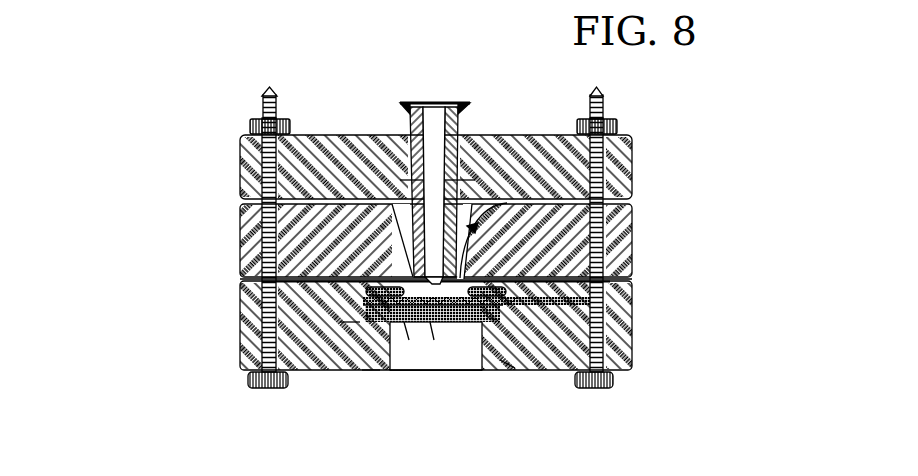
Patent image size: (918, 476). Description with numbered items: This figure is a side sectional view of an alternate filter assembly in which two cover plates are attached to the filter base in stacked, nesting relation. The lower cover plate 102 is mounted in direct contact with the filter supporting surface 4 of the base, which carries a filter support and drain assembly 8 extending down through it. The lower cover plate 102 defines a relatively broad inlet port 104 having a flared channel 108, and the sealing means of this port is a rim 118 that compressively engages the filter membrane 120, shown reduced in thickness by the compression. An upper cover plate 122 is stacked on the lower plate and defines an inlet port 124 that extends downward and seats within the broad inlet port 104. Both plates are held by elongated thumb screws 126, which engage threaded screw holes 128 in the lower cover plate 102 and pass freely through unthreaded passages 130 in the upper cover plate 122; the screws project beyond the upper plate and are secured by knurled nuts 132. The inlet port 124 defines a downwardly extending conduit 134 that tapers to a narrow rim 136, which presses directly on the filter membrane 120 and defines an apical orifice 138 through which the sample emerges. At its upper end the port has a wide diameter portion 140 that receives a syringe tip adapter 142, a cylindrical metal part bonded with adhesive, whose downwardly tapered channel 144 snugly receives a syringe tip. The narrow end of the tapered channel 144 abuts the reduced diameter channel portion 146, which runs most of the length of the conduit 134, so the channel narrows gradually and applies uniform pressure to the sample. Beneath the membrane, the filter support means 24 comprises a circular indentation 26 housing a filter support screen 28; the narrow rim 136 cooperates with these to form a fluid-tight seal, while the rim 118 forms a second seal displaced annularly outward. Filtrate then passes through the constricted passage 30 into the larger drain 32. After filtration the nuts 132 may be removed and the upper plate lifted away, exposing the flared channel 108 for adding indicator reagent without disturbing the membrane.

The filter supporting surface 4 is at (565, 299).
The filter support and drain assembly 8 is at (370, 372).
The filter support means 24 is at (352, 322).
The circular indentation 26 is at (407, 322).
The filter support screen 28 is at (512, 366).
The constricted passage 30 is at (432, 322).
The drain 32 is at (470, 365).
The lower cover plate 102 is at (230, 242).
The inlet port 104 is at (385, 205).
The flared channel 108 is at (483, 217).
The rim 118 is at (632, 258).
The filter membrane 120 is at (630, 313).
The upper cover plate 122 is at (230, 172).
The inlet port 124 is at (402, 122).
The thumb screw 126 is at (262, 388).
The threaded screw hole 128 is at (238, 262).
The unthreaded passage 130 is at (236, 150).
The knurled nut 132 is at (250, 120).
The conduit 134 is at (242, 279).
The narrow rim 136 is at (484, 373).
The apical orifice 138 is at (436, 346).
The wide diameter portion 140 is at (465, 165).
The syringe tip adapter 142 is at (458, 94).
The tapered channel 144 is at (431, 102).
The reduced diameter channel portion 146 is at (384, 190).